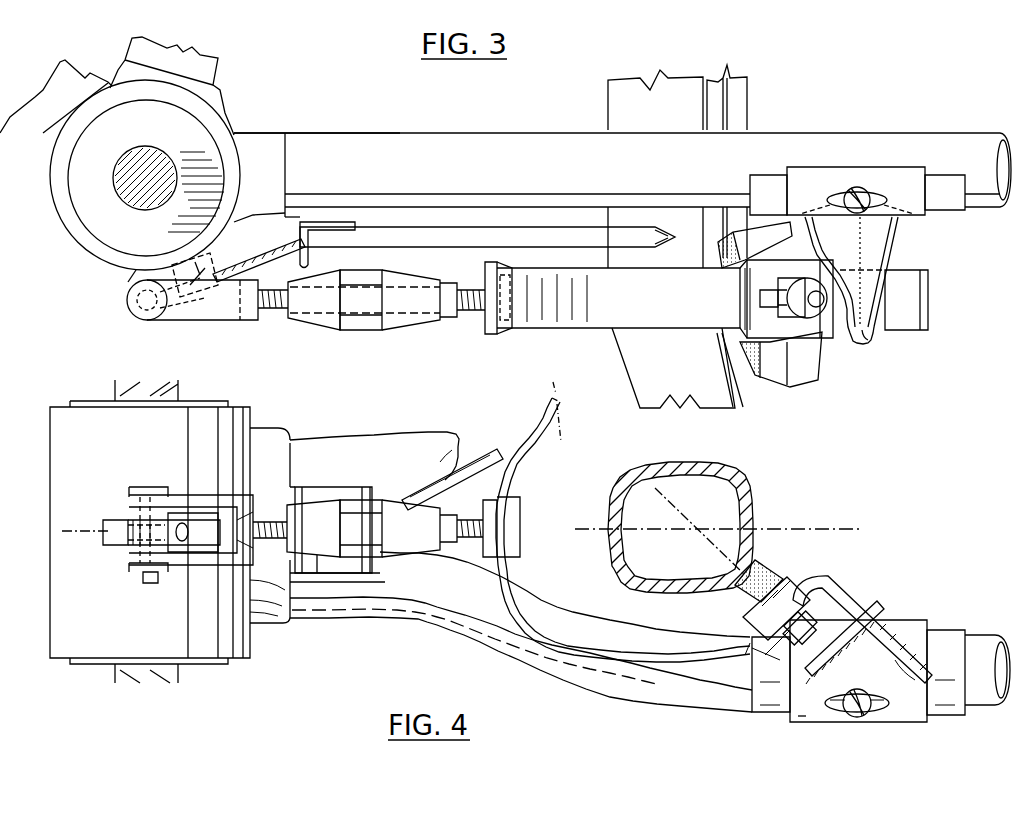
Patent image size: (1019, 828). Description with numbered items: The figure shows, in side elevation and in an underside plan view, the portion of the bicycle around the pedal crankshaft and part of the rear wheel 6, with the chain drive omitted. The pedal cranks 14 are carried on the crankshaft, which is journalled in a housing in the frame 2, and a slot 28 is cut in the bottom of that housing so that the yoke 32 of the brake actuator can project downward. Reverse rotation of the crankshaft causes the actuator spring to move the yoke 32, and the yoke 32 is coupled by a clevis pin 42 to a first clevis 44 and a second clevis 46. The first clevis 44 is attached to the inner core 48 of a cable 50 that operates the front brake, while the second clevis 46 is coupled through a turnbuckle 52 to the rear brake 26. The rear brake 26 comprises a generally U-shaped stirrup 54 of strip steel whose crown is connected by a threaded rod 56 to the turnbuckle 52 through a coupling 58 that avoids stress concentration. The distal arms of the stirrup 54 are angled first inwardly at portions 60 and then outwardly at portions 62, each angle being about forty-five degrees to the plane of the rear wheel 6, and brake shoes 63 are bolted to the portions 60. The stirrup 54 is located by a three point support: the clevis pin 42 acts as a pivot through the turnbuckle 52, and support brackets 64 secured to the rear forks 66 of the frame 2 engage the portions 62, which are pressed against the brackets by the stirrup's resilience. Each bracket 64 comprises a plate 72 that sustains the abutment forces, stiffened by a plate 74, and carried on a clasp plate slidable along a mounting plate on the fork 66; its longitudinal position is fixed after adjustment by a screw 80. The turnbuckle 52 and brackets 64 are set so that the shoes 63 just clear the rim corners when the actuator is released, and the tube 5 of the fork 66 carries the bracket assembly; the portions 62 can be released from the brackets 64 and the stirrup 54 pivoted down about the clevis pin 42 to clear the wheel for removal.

In FIG. 3, the frame 2 is at (480, 134).
In FIG. 4, the frame 2 is at (370, 628).
In FIG. 4, the tube 5 is at (886, 726).
In FIG. 3, the rear wheel 6 is at (632, 380).
In FIG. 4, the rear wheel 6 is at (615, 478).
In FIG. 3, the pedal cranks 14 is at (145, 152).
In FIG. 3, the rear brake 26 is at (552, 342).
In FIG. 4, the slot 28 is at (112, 530).
In FIG. 3, the yoke 32 is at (120, 283).
In FIG. 4, the yoke 32 is at (134, 540).
In FIG. 3, the clevis pin 42 is at (133, 312).
In FIG. 4, the clevis pin 42 is at (152, 490).
In FIG. 3, the first clevis 44 is at (218, 262).
In FIG. 4, the first clevis 44 is at (212, 545).
In FIG. 3, the second clevis 46 is at (200, 322).
In FIG. 4, the second clevis 46 is at (200, 495).
In FIG. 3, the inner core 48 is at (262, 262).
In FIG. 4, the inner core 48 is at (240, 512).
In FIG. 3, the cable 50 is at (524, 230).
In FIG. 4, the cable 50 is at (488, 455).
In FIG. 3, the turnbuckle 52 is at (364, 331).
In FIG. 4, the turnbuckle 52 is at (404, 518).
In FIG. 3, the stirrup 54 is at (607, 300).
In FIG. 4, the stirrup 54 is at (578, 642).
In FIG. 3, the threaded rod 56 is at (470, 312).
In FIG. 3, the coupling 58 is at (520, 288).
In FIG. 4, the coupling 58 is at (520, 535).
In FIG. 3, the inwardly angled portions 60 is at (812, 332).
In FIG. 4, the inwardly angled portions 60 is at (745, 623).
In FIG. 3, the outwardly angled portions 62 is at (918, 332).
In FIG. 4, the outwardly angled portions 62 is at (852, 602).
In FIG. 3, the brake shoes 63 is at (795, 370).
In FIG. 4, the brake shoes 63 is at (792, 580).
In FIG. 3, the support brackets 64 is at (882, 345).
In FIG. 4, the support brackets 64 is at (806, 728).
In FIG. 3, the rear forks 66 is at (388, 133).
In FIG. 4, the rear forks 66 is at (412, 432).
In FIG. 3, the plate 72 is at (854, 272).
In FIG. 4, the plate 72 is at (818, 668).
In FIG. 3, the stiffening plate 74 is at (886, 240).
In FIG. 4, the stiffening plate 74 is at (895, 672).
In FIG. 3, the screw 80 is at (843, 186).
In FIG. 4, the screw 80 is at (881, 671).